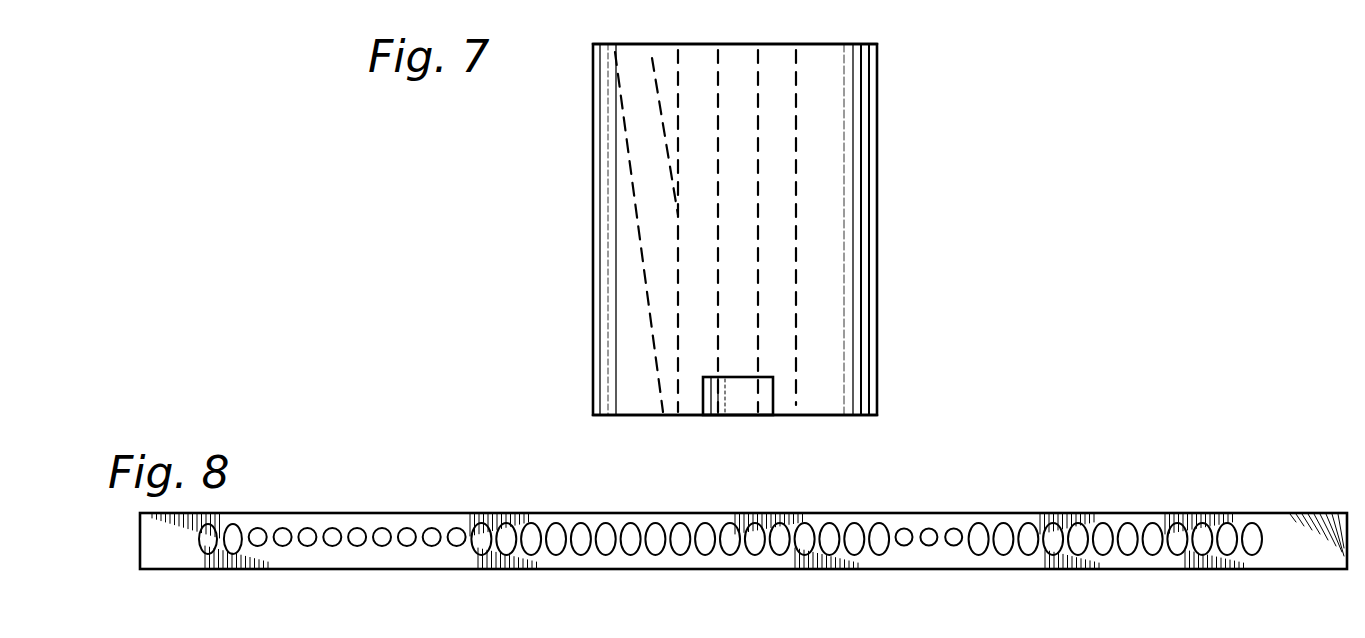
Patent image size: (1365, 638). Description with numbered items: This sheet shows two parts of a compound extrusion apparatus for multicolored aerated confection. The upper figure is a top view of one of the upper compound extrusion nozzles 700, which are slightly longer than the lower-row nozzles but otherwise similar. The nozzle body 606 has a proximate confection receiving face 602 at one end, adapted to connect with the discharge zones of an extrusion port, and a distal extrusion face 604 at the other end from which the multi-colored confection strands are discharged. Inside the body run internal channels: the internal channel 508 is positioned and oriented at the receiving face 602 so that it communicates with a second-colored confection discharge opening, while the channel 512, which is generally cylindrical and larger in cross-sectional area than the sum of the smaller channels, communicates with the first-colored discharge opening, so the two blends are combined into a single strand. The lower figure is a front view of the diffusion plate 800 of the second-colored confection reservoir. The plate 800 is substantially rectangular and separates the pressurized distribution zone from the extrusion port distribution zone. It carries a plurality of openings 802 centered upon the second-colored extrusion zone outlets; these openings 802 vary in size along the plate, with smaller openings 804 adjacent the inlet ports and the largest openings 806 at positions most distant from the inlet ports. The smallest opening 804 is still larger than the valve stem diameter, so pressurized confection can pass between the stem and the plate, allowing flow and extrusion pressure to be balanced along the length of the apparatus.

In FIG. 7, the upper compound extrusion nozzle 700 is at (741, 239).
In FIG. 7, the proximate confection receiving face 602 is at (602, 43).
In FIG. 7, the distal extrusion face 604 is at (615, 417).
In FIG. 7, the nozzle body 606 is at (603, 260).
In FIG. 7, the channel 512 is at (681, 82).
In FIG. 7, the internal channel 508 is at (631, 186).
In FIG. 8, the diffusion plate 800 is at (743, 530).
In FIG. 8, the openings 802 is at (290, 547).
In FIG. 8, the smaller openings 804 is at (384, 547).
In FIG. 8, the largest openings 806 is at (212, 556).